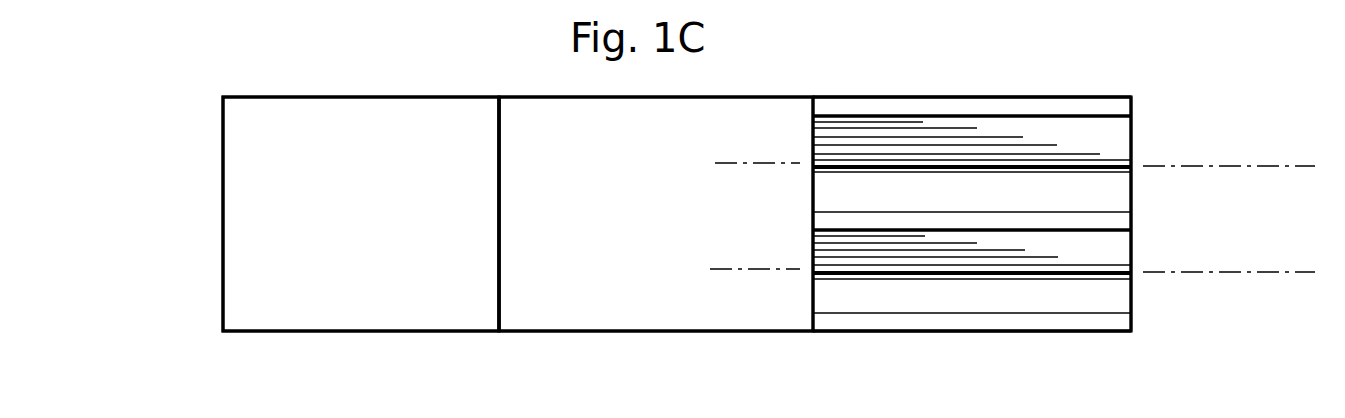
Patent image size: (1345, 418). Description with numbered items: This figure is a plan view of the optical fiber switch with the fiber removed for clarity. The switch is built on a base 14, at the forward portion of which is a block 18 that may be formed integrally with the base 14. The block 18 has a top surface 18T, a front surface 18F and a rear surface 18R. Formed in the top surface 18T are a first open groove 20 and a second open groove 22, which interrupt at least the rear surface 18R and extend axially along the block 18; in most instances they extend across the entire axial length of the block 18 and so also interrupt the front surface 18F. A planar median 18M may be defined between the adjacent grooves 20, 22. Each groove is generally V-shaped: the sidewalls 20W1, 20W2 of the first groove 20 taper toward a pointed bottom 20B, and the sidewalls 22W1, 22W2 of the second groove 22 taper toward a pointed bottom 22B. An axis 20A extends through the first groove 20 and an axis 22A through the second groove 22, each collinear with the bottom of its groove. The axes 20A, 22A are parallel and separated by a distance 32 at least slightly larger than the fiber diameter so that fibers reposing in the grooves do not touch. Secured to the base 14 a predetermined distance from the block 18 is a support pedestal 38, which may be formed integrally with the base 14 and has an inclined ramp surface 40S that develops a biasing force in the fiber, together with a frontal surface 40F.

The base 14 is at (622, 318).
The block portion 18 is at (992, 86).
The rear surface 18R is at (812, 117).
The top surface 18T is at (1115, 103).
The front surface 18F is at (1131, 126).
The planar median 18M is at (1116, 221).
The first open groove 20 is at (925, 134).
The axis of first groove 20A is at (776, 163).
The pointed bottom of first groove 20B is at (1042, 166).
The first sidewall of first groove 20W1 is at (902, 137).
The second sidewall of first groove 20W2 is at (972, 188).
The second open groove 22 is at (928, 309).
The axis of second groove 22A is at (777, 269).
The pointed bottom of second groove 22B is at (1040, 272).
The first sidewall of second groove 22W1 is at (893, 250).
The second sidewall of second groove 22W2 is at (972, 293).
The separation distance 32 is at (1302, 168).
The support pedestal 38 is at (347, 345).
The ramp surface 40S is at (415, 133).
The frontal surface 40F is at (500, 195).